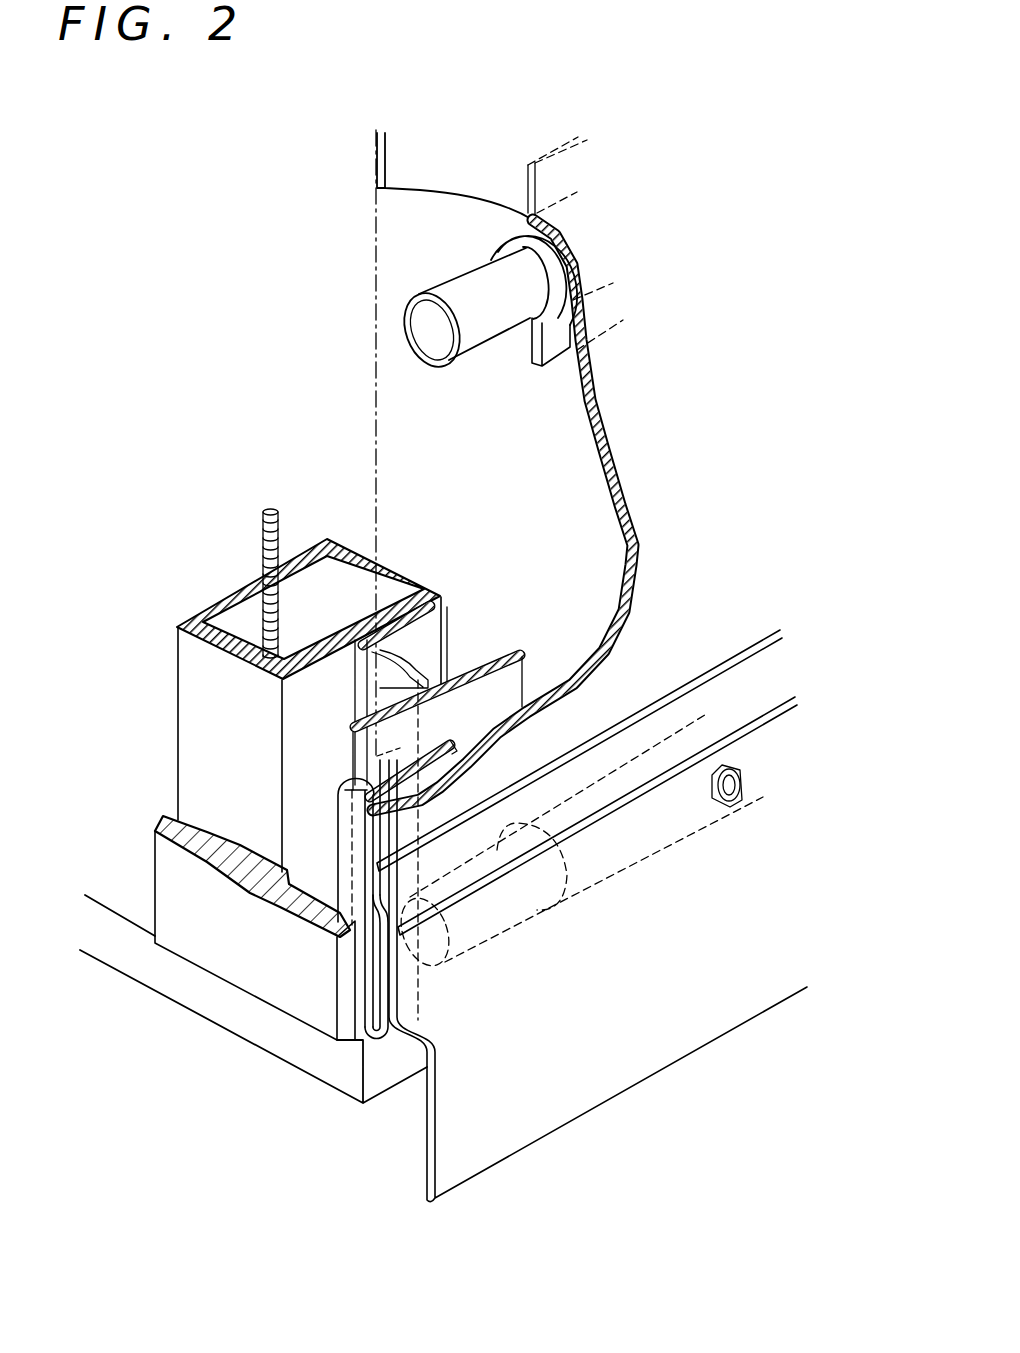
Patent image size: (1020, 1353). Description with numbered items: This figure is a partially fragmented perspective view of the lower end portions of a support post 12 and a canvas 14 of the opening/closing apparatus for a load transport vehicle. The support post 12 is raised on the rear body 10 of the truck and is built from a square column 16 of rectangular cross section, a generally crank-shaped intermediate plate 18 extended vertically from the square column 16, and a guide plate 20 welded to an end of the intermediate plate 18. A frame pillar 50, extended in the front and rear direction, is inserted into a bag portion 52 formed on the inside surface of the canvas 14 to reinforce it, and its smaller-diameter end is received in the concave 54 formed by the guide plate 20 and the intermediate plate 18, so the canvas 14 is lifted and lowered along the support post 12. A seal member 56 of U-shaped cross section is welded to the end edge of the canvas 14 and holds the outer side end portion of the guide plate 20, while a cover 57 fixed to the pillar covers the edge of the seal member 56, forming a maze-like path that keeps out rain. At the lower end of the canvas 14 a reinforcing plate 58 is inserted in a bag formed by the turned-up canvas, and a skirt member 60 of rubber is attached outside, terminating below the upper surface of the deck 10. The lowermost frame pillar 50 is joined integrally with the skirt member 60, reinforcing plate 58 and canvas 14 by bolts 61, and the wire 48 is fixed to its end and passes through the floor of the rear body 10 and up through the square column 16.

The rear body 10 is at (118, 957).
The support post 12 is at (150, 682).
The canvas 14 is at (377, 165).
The square column 16 is at (190, 622).
The intermediate plate 18 is at (410, 670).
The guide plate 20 is at (522, 647).
The wire 48 is at (260, 530).
The frame pillar 50 is at (475, 337).
The bag portion 52 is at (555, 340).
The concave 54 is at (440, 618).
The seal member 56 is at (337, 793).
The cover 57 is at (160, 823).
The reinforcing plate 58 is at (373, 1007).
The skirt member 60 is at (425, 1142).
The bolt 61 is at (745, 767).